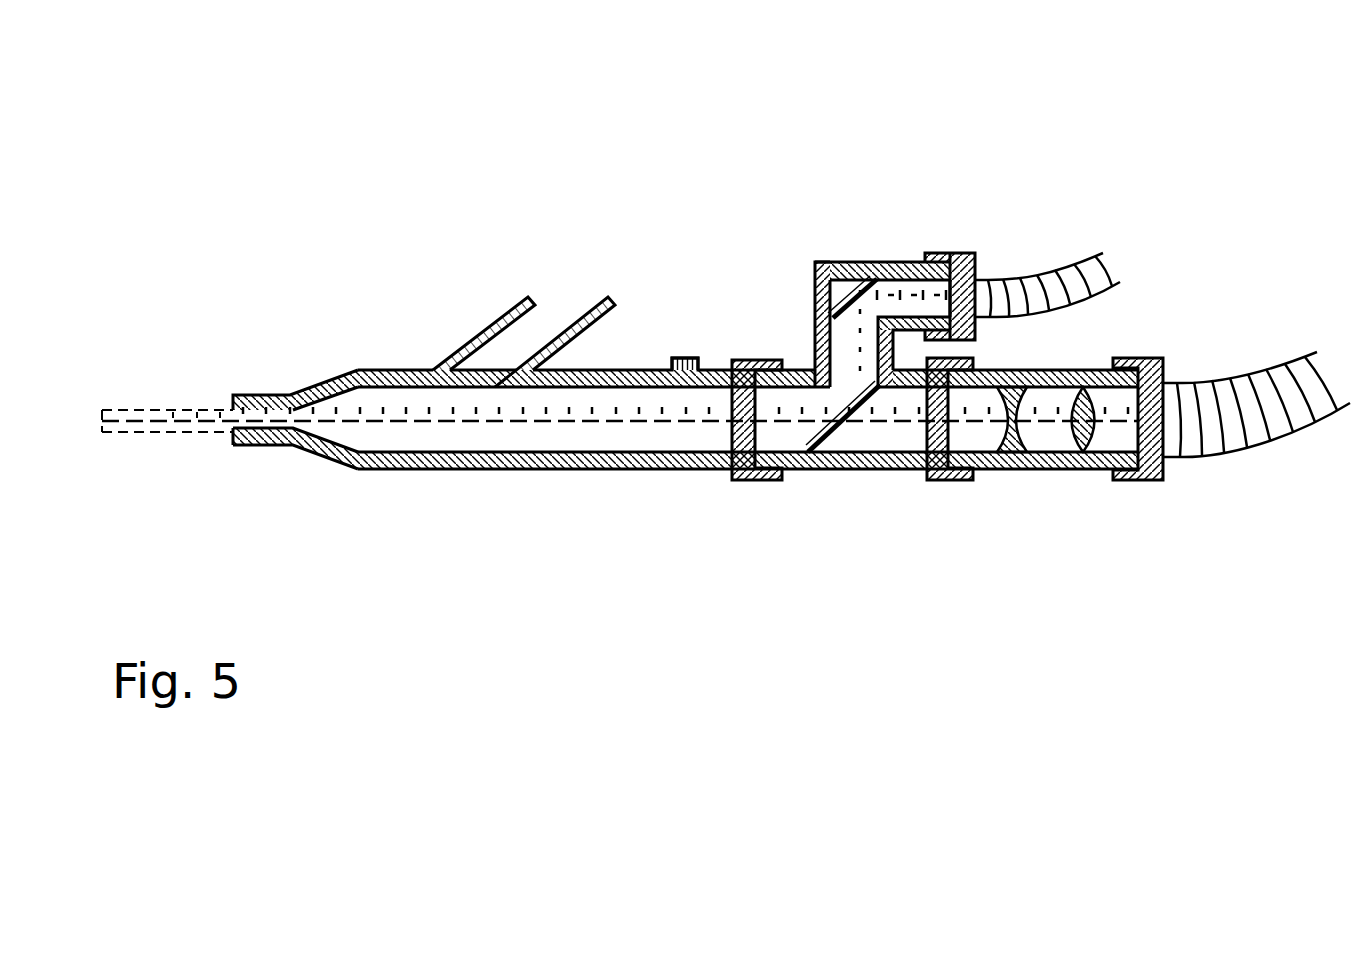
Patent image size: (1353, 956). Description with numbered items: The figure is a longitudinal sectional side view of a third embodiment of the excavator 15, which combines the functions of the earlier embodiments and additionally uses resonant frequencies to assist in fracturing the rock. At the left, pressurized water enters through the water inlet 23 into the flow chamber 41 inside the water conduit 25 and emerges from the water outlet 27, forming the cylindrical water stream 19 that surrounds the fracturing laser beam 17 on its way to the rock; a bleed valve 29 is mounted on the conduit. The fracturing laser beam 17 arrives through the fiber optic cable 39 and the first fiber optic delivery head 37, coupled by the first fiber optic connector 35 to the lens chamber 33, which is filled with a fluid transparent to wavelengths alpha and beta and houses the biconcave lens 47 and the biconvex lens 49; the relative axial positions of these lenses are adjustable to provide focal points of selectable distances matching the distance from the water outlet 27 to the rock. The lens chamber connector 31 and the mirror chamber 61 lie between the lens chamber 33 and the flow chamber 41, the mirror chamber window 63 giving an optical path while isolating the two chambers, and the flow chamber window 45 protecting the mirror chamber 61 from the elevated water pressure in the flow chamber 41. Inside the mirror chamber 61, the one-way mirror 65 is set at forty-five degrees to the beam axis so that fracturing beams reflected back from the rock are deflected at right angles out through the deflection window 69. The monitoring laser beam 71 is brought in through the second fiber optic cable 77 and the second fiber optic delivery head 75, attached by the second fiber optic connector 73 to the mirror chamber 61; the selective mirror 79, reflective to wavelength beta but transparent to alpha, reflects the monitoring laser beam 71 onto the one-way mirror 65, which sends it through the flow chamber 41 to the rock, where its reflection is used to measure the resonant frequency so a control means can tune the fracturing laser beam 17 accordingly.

The excavator 15 is at (720, 148).
The fracturing laser beam 17 is at (515, 425).
The water stream 19 is at (88, 443).
The water inlet 23 is at (552, 313).
The water conduit 25 is at (390, 355).
The water outlet 27 is at (198, 448).
The bleed valve 29 is at (660, 360).
The lens chamber connector 31 is at (747, 485).
The lens chamber 33 is at (1041, 597).
The first fiber optic connector 35 is at (1137, 490).
The first fiber optic delivery head 37 is at (1170, 378).
The fiber optic cable 39 is at (1297, 448).
The flow chamber 41 is at (413, 437).
The flow chamber window 45 is at (720, 427).
The biconcave lens 47 is at (987, 430).
The biconvex lens 49 is at (1067, 440).
The mirror chamber 61 is at (806, 638).
The mirror chamber window 63 is at (900, 432).
The one-way mirror 65 is at (808, 428).
The deflection window 69 is at (847, 260).
The monitoring laser beam 71 is at (348, 408).
The second fiber optic connector 73 is at (938, 248).
The second fiber optic delivery head 75 is at (980, 268).
The second fiber optic cable 77 is at (1078, 250).
The selective mirror 79 is at (812, 278).